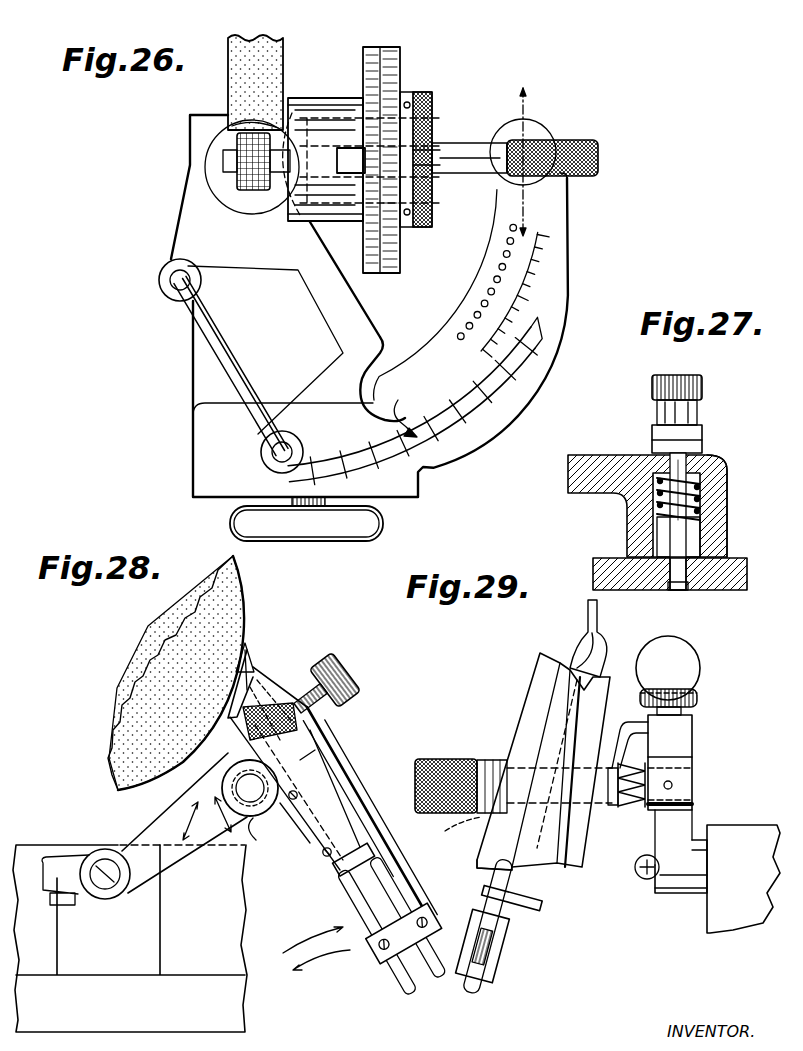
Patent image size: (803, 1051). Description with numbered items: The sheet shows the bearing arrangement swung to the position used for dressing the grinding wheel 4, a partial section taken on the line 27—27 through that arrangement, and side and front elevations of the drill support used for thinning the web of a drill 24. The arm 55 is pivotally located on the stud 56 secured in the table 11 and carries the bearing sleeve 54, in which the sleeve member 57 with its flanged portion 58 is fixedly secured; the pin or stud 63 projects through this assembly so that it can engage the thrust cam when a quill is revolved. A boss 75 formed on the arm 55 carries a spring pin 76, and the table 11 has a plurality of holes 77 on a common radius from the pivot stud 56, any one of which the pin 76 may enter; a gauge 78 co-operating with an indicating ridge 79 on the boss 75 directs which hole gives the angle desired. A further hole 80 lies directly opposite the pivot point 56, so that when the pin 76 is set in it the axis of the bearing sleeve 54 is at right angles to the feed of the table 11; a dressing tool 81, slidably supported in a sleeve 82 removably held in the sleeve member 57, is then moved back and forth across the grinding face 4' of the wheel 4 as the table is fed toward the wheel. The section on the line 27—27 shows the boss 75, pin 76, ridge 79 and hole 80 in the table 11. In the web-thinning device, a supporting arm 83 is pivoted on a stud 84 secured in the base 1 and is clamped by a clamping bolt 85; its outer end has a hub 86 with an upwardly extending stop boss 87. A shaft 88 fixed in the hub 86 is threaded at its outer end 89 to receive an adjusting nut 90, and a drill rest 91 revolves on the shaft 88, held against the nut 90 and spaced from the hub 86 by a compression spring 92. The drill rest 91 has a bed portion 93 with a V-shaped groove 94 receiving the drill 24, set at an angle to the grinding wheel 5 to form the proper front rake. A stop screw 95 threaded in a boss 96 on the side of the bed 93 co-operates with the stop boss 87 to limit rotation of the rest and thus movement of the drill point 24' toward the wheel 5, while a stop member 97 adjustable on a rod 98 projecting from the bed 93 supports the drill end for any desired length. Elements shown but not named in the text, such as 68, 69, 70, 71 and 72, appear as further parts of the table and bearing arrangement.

In FIG. 28, the base 1 is at (130, 938).
In FIG. 29, the base 1 is at (743, 879).
In FIG. 26, the grinding wheel 4 is at (241, 79).
In FIG. 26, the grinding wheel edge 4' is at (236, 107).
In FIG. 28, the grinding wheel 5 is at (134, 665).
In FIG. 29, the grinding wheel 5 is at (588, 612).
In FIG. 26, the table 11 is at (205, 445).
In FIG. 27, the table 11 is at (609, 558).
In FIG. 28, the drill 24 is at (368, 816).
In FIG. 29, the drill 24 is at (510, 887).
In FIG. 28, the point of the drill 24' is at (271, 650).
In FIG. 26, the section line 27— 27 is at (528, 150).
In FIG. 26, the bearing sleeve 54 is at (310, 107).
In FIG. 26, the arm 55 is at (470, 141).
In FIG. 27, the arm 55 is at (615, 442).
In FIG. 26, the stud 56 is at (236, 160).
In FIG. 26, the sleeve member 57 is at (407, 92).
In FIG. 26, the flanged portion 58 is at (384, 50).
In FIG. 26, the pin or stud 63 is at (432, 183).
In FIG. 26, the swinging body plate 68 is at (330, 297).
In FIG. 26, the swinging head / pivot 69 is at (403, 313).
In FIG. 28, the swinging head / pivot 69 is at (250, 788).
In FIG. 26, the graduated scale band 70 is at (468, 420).
In FIG. 26, the link rod 71 is at (202, 323).
In FIG. 26, the pivot pins / foot 72 is at (166, 280).
In FIG. 26, the boss 75 is at (526, 133).
In FIG. 27, the boss 75 is at (716, 529).
In FIG. 26, the spring pin 76 is at (515, 160).
In FIG. 27, the spring pin 76 is at (700, 443).
In FIG. 26, the holes 77 is at (488, 289).
In FIG. 26, the gauge 78 is at (530, 278).
In FIG. 26, the indicating ridge 79 is at (560, 143).
In FIG. 27, the indicating ridge 79 is at (726, 473).
In FIG. 26, the hole 80 is at (540, 187).
In FIG. 27, the hole 80 is at (677, 590).
In FIG. 26, the dressing tool 81 is at (243, 188).
In FIG. 26, the sleeve 82 is at (303, 223).
In FIG. 28, the supporting arm 83 is at (173, 860).
In FIG. 29, the supporting arm 83 is at (682, 897).
In FIG. 28, the stud 84 is at (105, 890).
In FIG. 29, the stud 84 is at (640, 875).
In FIG. 28, the clamping bolt 85 is at (74, 831).
In FIG. 29, the hub 86 is at (688, 785).
In FIG. 28, the stop boss 87 is at (223, 749).
In FIG. 29, the stop boss 87 is at (678, 748).
In FIG. 29, the shaft 88 is at (458, 760).
In FIG. 29, the threaded outer end 89 is at (451, 833).
In FIG. 28, the adjusting nut 90 is at (279, 829).
In FIG. 29, the adjusting nut 90 is at (440, 761).
In FIG. 28, the drill rest 91 is at (315, 849).
In FIG. 29, the drill rest 91 is at (493, 780).
In FIG. 29, the compression spring 92 is at (636, 808).
In FIG. 28, the bed portion 93 is at (322, 792).
In FIG. 29, the bed portion 93 is at (543, 672).
In FIG. 28, the V-shaped groove 94 is at (341, 896).
In FIG. 29, the V-shaped groove 94 is at (553, 712).
In FIG. 28, the stop screw 95 is at (350, 688).
In FIG. 29, the stop screw 95 is at (668, 671).
In FIG. 29, the boss 96 is at (684, 711).
In FIG. 28, the stop member 97 is at (400, 904).
In FIG. 29, the stop member 97 is at (480, 880).
In FIG. 28, the rod 98 is at (398, 984).
In FIG. 29, the rod 98 is at (477, 994).